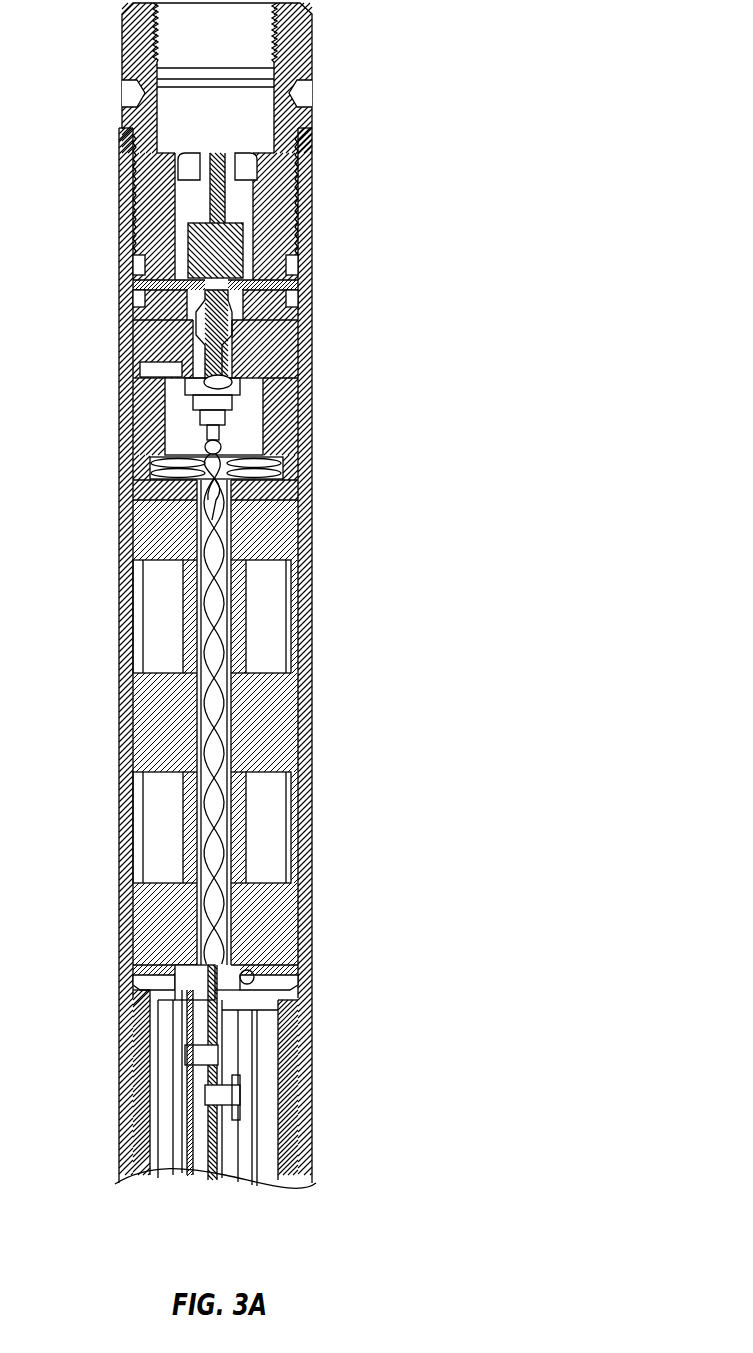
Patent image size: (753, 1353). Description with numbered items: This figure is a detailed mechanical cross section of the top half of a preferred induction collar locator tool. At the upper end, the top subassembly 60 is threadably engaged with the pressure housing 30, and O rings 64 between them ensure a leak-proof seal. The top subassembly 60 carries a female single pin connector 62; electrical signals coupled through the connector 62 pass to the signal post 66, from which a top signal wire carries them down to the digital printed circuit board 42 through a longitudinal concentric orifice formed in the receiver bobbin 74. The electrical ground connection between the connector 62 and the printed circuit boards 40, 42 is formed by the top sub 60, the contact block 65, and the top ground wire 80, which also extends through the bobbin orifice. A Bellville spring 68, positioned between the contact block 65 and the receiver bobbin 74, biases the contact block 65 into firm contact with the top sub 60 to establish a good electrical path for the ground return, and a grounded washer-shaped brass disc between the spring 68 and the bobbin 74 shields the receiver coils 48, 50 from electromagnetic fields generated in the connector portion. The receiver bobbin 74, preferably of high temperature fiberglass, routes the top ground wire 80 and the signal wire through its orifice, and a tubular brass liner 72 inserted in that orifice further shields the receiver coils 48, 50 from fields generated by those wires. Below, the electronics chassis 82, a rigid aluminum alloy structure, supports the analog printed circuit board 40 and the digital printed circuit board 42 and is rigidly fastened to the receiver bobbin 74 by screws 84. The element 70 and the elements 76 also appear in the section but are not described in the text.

The pressure housing 30 is at (312, 889).
The analog printed circuit board 40 is at (240, 1116).
The digital printed circuit board 42 is at (188, 1073).
The receiver coil 48 is at (290, 836).
The receiver coil 50 is at (270, 597).
The top subassembly 60 is at (301, 56).
The female single pin connector 62 is at (243, 150).
The O rings 64 is at (299, 267).
The contact block 65 is at (272, 340).
The signal post 66 is at (225, 436).
The Bellville spring 68 is at (265, 471).
The spacer 70 is at (298, 492).
The brass liner 72 is at (232, 556).
The receiver bobbin 74 is at (265, 709).
The coil spacer 76 is at (248, 636).
The top ground wire 80 is at (236, 420).
The electronics chassis 82 is at (297, 1043).
The screws 84 is at (287, 981).